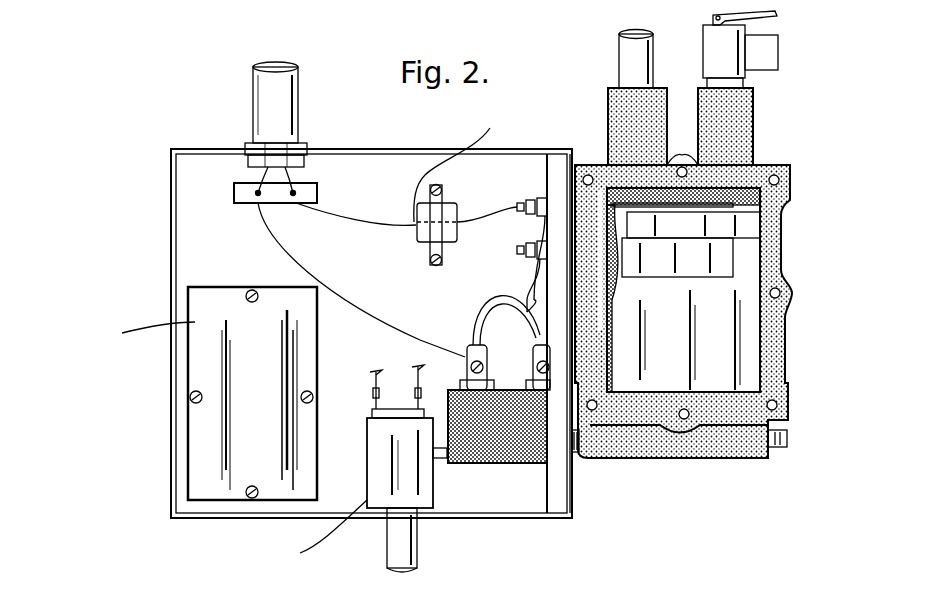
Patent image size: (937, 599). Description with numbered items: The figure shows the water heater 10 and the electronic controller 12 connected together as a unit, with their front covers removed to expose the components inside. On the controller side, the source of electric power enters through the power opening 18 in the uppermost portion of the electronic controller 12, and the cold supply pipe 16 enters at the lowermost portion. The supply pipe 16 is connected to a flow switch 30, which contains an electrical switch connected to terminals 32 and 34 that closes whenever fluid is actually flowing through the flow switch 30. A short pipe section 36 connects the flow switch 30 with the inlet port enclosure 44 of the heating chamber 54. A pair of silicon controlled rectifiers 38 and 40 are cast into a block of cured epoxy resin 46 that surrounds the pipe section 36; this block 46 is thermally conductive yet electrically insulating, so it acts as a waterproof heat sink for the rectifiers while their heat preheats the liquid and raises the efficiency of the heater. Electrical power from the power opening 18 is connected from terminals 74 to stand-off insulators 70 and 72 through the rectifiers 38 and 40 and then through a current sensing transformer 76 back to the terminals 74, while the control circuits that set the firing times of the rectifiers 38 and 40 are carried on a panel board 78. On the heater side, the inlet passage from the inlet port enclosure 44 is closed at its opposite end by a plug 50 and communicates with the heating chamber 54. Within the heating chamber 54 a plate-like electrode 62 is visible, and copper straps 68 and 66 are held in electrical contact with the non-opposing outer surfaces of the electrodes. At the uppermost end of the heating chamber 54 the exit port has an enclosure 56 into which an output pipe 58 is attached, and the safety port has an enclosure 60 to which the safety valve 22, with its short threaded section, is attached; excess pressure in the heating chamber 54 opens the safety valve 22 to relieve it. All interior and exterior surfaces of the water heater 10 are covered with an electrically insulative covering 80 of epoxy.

The water heater 10 is at (802, 176).
The electronic controller 12 is at (170, 262).
The supply pipe 16 is at (393, 548).
The power opening 18 is at (265, 115).
The safety valve 22 is at (703, 42).
The flow switch 30 is at (366, 481).
The terminal 32 is at (372, 395).
The terminal 34 is at (414, 395).
The short pipe section 36 is at (441, 460).
The silicon controlled rectifier 38 is at (462, 378).
The silicon controlled rectifier 40 is at (530, 375).
The inlet port enclosure 44 is at (620, 458).
The block of cured epoxy resin 46 is at (525, 455).
The plug 50 is at (777, 450).
The heating chamber 54 is at (783, 340).
The exit port enclosure 56 is at (610, 145).
The output pipe 58 is at (632, 62).
The safety port enclosure 60 is at (760, 162).
The electrode 62 is at (781, 227).
The copper strap 66 is at (790, 200).
The copper strap 68 is at (782, 266).
The stand-off insulator 70 is at (530, 243).
The stand-off insulator 72 is at (536, 200).
The terminals 74 is at (303, 184).
The current sensing transformer 76 is at (447, 203).
The panel board 78 is at (266, 419).
The electrically insulative covering 80 is at (748, 118).